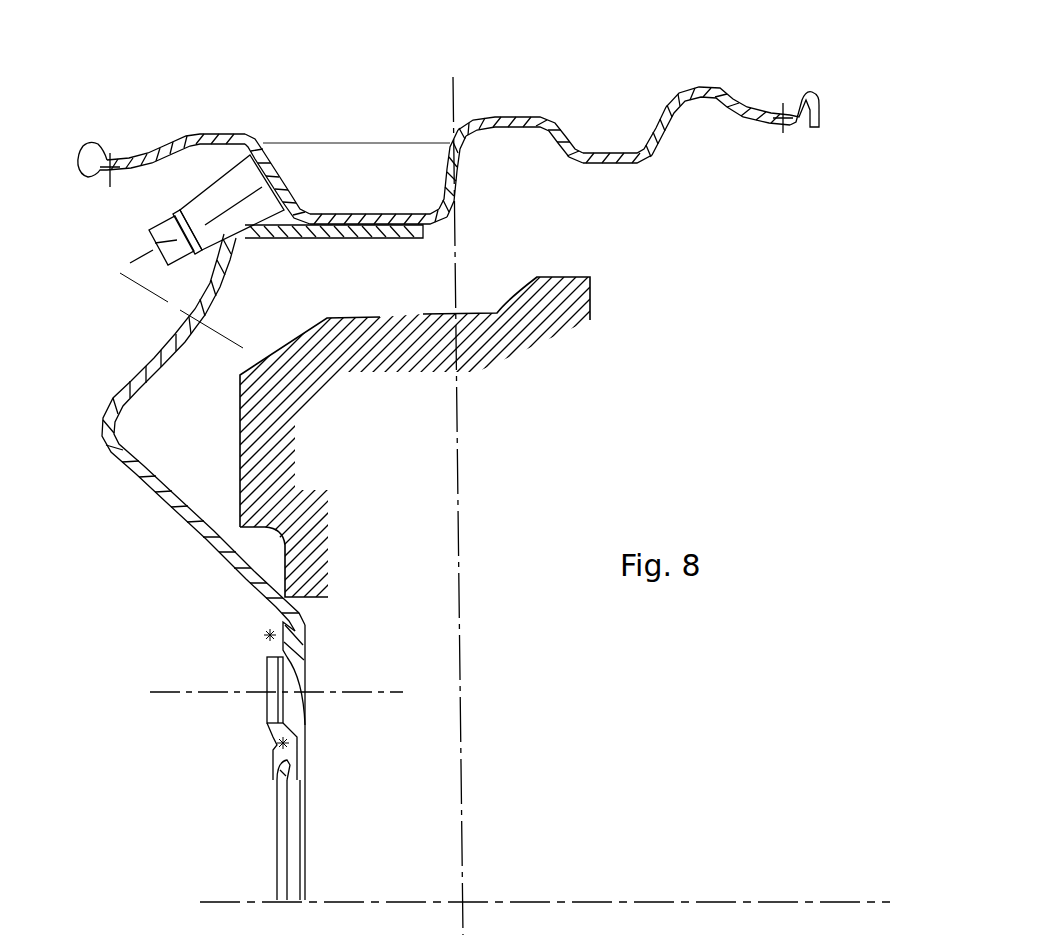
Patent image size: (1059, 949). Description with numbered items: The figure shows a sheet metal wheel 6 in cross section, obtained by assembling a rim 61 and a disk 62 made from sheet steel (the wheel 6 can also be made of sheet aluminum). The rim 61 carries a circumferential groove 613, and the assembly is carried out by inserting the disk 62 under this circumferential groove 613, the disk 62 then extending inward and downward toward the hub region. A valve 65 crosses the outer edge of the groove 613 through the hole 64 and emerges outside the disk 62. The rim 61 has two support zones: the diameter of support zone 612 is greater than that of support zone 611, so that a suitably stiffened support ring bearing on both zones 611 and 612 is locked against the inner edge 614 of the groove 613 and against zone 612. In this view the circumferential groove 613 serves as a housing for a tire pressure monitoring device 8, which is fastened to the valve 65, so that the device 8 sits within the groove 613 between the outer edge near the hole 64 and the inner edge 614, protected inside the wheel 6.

The wheel 6 is at (640, 263).
The tire pressure monitoring device 8 is at (347, 148).
The rim 61 is at (620, 163).
The disk 62 is at (167, 507).
The hole 64 is at (282, 178).
The valve 65 is at (200, 203).
The support zone 611 is at (205, 130).
The support zone 612 is at (483, 117).
The circumferential groove 613 is at (400, 187).
The inner edge 614 is at (450, 143).